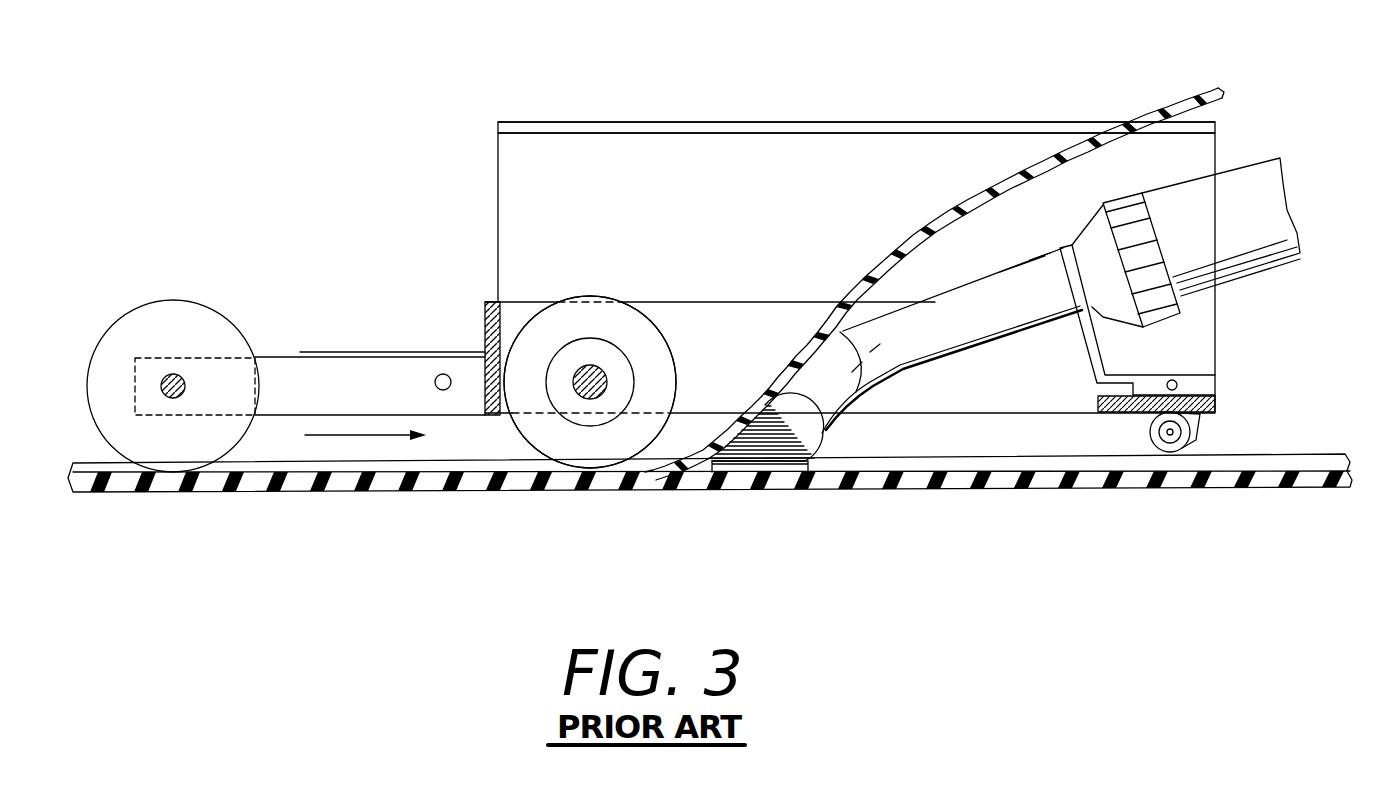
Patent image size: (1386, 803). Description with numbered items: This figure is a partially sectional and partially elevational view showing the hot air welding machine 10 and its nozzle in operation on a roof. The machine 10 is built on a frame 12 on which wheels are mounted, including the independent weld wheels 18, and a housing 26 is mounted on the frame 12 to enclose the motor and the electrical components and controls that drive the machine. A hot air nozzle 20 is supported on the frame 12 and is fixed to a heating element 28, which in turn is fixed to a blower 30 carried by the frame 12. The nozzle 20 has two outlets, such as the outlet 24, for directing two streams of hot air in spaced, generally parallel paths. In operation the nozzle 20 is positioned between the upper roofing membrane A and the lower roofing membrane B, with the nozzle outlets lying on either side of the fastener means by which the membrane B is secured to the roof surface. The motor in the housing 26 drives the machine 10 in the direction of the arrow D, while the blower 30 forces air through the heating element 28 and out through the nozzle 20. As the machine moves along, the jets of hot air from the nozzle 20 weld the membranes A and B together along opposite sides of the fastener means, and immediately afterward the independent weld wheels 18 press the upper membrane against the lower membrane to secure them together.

The machine 10 is at (534, 82).
The frame 12 is at (498, 203).
The independent weld wheels 18 is at (650, 342).
The hot air nozzle 20 is at (807, 432).
The second outlet 24 is at (775, 472).
The housing 26 is at (898, 118).
The heating element 28 is at (972, 330).
The blower 30 is at (1240, 183).
The roofing membrane A is at (893, 245).
The roofing membrane B is at (980, 488).
The direction of travel D is at (365, 440).